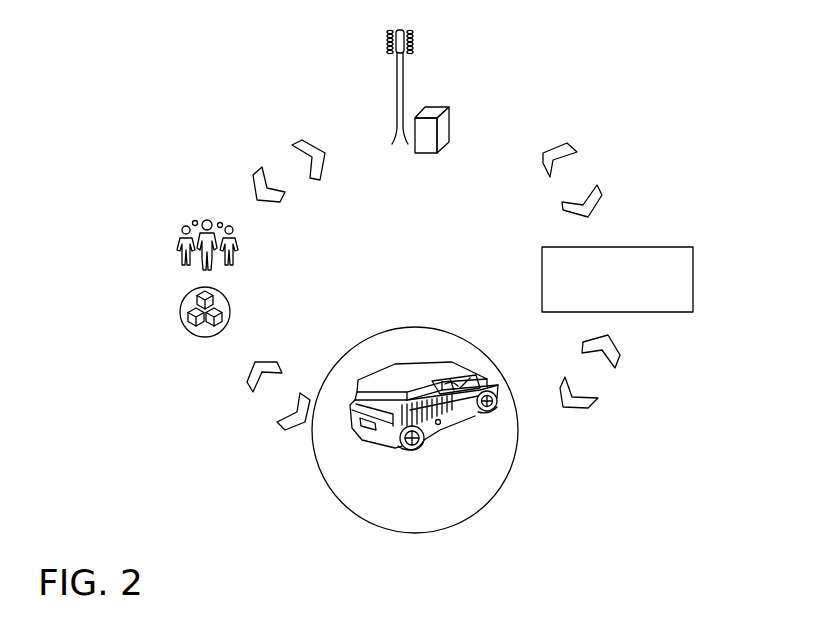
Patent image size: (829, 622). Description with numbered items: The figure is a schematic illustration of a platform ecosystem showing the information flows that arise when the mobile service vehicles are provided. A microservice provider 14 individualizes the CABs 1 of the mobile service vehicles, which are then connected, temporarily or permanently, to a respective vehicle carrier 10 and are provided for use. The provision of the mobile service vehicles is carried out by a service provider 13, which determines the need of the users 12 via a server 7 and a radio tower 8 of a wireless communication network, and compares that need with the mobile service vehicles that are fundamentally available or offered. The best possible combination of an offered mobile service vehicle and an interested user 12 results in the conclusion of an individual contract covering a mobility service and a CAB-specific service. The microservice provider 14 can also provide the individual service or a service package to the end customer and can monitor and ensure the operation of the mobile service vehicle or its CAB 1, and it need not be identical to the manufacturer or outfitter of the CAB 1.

The CAB 1 is at (470, 414).
The server 7 is at (441, 123).
The radio tower 8 is at (397, 100).
The vehicle carrier 10 is at (438, 422).
The users 12 is at (206, 232).
The service provider 13 is at (681, 277).
The microservice provider 14 is at (194, 326).